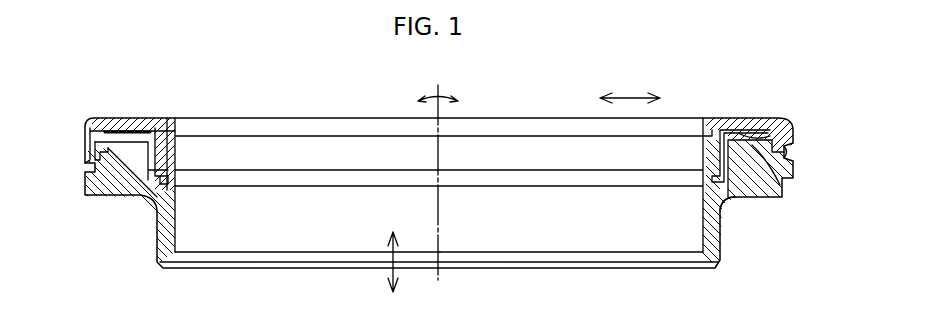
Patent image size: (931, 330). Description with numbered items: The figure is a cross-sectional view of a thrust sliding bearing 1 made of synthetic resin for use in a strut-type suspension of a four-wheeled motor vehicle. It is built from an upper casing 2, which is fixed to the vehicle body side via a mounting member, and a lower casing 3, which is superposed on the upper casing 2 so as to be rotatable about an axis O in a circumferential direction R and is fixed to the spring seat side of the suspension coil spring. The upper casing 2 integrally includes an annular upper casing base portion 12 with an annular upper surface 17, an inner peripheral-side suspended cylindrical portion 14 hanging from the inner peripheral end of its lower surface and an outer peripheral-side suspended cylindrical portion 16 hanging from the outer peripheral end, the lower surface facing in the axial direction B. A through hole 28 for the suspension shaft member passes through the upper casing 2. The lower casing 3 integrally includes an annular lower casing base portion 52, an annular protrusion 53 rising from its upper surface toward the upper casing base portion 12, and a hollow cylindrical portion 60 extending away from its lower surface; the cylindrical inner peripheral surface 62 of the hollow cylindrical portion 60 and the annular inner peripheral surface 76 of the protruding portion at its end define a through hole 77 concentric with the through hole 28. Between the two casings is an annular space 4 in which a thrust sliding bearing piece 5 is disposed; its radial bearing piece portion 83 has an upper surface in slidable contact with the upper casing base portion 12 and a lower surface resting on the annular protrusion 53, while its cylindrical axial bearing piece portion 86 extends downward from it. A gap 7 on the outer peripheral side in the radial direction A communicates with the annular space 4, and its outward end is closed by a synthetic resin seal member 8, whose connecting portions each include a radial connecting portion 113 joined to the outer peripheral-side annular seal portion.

The thrust sliding bearing 1 is at (111, 245).
The upper casing 2 is at (117, 124).
The lower casing 3 is at (751, 200).
The annular space 4 is at (790, 128).
The thrust sliding bearing piece 5 is at (168, 146).
The gap on outer peripheral side 7 is at (85, 163).
The seal member 8 is at (97, 196).
The upper casing base portion 12 is at (735, 126).
The inner peripheral-side suspended cylindrical portion 14 is at (173, 140).
The outer peripheral-side suspended cylindrical portion 16 is at (789, 153).
The annular upper surface 17 is at (97, 128).
The through hole 28 is at (331, 143).
The lower casing base portion 52 is at (125, 196).
The annular protrusion 53 is at (780, 200).
The hollow cylindrical portion 60 is at (160, 223).
The cylindrical inner peripheral surface 62 is at (610, 262).
The annular inner peripheral surface 76 is at (652, 268).
The through hole 77 is at (277, 262).
The radial bearing piece portion 83 is at (758, 134).
The axial bearing piece portion 86 is at (702, 138).
The radial connecting portion 113 is at (154, 130).
The circumferential direction R is at (456, 100).
The radial direction A is at (626, 97).
The axial direction B is at (393, 275).
The axis O is at (440, 272).